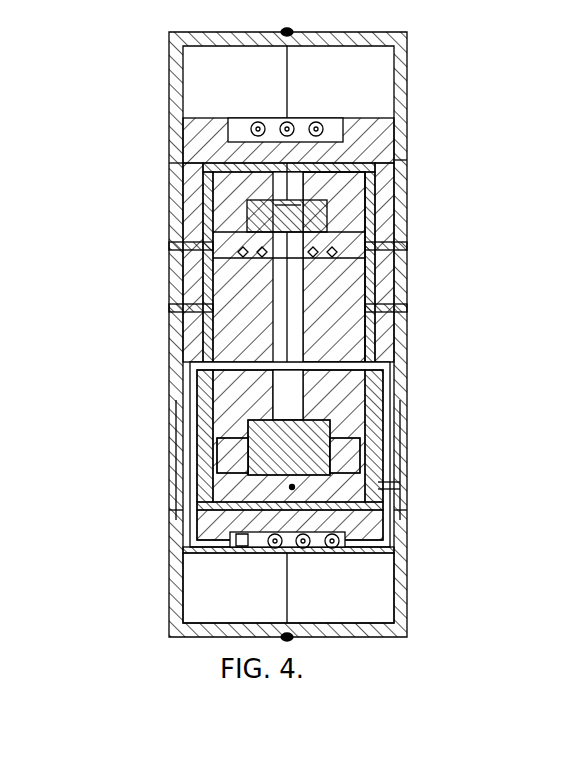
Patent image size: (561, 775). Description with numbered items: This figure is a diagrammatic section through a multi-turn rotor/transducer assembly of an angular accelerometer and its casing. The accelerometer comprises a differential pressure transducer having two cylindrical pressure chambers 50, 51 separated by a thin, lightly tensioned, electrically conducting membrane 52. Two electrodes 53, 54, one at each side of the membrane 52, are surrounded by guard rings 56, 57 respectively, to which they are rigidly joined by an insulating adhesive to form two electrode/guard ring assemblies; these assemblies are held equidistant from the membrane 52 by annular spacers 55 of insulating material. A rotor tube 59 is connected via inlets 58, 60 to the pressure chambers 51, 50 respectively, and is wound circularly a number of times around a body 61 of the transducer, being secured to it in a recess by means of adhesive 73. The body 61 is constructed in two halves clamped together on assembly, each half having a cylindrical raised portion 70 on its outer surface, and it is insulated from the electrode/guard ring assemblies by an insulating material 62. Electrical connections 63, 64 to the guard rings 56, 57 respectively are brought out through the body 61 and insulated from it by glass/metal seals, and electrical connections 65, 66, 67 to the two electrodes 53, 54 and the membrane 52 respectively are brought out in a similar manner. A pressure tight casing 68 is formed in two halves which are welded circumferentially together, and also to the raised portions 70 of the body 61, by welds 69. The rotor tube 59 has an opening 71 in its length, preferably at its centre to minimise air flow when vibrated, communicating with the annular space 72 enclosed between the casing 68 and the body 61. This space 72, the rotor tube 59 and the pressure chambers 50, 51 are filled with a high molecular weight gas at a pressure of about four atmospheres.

The pressure chamber 50 is at (255, 298).
The pressure chamber 51 is at (303, 303).
The membrane 52 is at (290, 341).
The electrode 53 is at (203, 333).
The electrode 54 is at (343, 353).
The annular spacers 55 is at (282, 207).
The guard ring 56 is at (247, 218).
The guard ring 57 is at (325, 237).
The inlet 58 is at (377, 367).
The rotor tube 59 is at (342, 553).
The inlet 60 is at (190, 368).
The body 61 is at (383, 137).
The insulating material 62 is at (372, 512).
The electrical connection 63 is at (169, 246).
The electrical connection 64 is at (407, 246).
The electrical connection 65 is at (169, 308).
The electrical connection 66 is at (407, 308).
The electrical connection 67 is at (292, 487).
The pressure tight casing 68 is at (401, 75).
The welds 69 is at (169, 163).
The cylindrical raised portion 70 is at (180, 472).
The opening 71 is at (285, 118).
The annular space 72 is at (382, 613).
The adhesive 73 is at (350, 120).